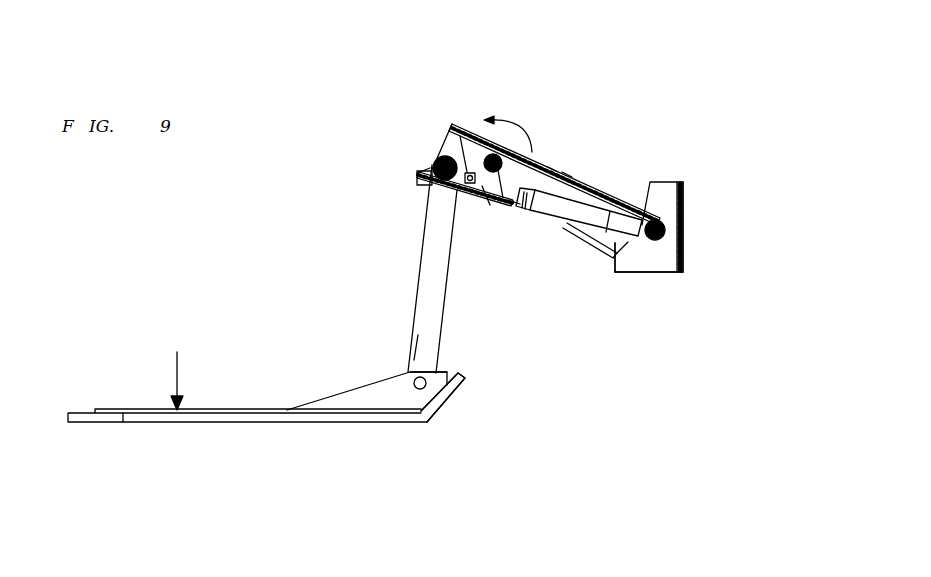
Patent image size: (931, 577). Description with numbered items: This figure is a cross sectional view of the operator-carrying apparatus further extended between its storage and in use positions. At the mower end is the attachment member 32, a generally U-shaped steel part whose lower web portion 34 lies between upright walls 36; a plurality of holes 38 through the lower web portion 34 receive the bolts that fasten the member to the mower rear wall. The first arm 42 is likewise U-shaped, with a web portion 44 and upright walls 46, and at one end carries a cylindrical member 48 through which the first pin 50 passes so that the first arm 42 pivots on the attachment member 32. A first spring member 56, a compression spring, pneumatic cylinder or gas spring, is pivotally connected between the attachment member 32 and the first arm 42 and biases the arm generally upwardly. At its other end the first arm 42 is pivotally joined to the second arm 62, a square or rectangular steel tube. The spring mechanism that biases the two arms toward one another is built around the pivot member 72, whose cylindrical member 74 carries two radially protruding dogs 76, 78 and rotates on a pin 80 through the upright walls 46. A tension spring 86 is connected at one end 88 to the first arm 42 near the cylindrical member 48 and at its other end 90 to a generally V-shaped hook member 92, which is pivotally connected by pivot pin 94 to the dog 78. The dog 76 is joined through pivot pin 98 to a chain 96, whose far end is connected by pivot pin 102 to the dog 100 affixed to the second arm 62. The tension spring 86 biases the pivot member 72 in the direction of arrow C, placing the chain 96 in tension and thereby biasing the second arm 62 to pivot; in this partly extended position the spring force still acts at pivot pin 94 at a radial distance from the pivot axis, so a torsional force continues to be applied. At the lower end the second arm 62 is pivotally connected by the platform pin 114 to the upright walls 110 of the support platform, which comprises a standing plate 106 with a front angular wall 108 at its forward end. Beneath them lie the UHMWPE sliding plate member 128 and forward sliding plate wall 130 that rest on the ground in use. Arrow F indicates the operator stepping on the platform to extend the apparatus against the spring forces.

The attachment member 32 is at (669, 175).
The lower web portion 34 is at (683, 252).
The upright walls 36 is at (660, 260).
The holes 38 is at (683, 202).
The first arm 42 is at (615, 193).
The web portion 44 is at (566, 173).
The upright walls 46 is at (526, 214).
The cylindrical member 48 is at (683, 182).
The first pin 50 is at (665, 228).
The first spring member 56 is at (604, 253).
The second arm 62 is at (440, 318).
The pivot member 72 is at (499, 141).
The cylindrical member 74 is at (552, 167).
The dog 76 is at (509, 209).
The dog 78 is at (464, 168).
The pin 80 is at (502, 160).
The tension spring 86 is at (566, 232).
The one end 88 is at (628, 242).
The other end 90 is at (501, 206).
The hook member 92 is at (457, 210).
The pivot pin 94 is at (452, 124).
The chain 96 is at (434, 192).
The pivot pin 98 is at (489, 208).
The dog 100 is at (433, 160).
The pivot pin 102 is at (417, 173).
The standing plate 106 is at (251, 410).
The front angular wall 108 is at (418, 335).
The upright walls 110 is at (357, 400).
The platform pin 114 is at (413, 367).
The sliding plate member 128 is at (217, 418).
The forward sliding plate wall 130 is at (437, 393).
The arrow F is at (176, 371).
The arrow C is at (508, 129).